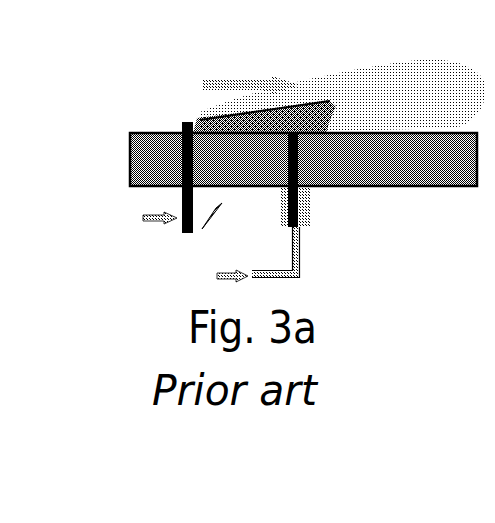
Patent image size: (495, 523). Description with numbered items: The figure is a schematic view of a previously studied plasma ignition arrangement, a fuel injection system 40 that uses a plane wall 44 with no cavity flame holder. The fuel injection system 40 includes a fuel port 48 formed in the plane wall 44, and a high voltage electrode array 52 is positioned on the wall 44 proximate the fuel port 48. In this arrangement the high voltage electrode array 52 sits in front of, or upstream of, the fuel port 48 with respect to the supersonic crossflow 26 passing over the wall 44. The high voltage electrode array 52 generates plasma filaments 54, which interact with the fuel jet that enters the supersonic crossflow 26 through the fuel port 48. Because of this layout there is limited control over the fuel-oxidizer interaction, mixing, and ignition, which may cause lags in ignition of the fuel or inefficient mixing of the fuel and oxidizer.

The fuel injection system 40 is at (259, 153).
The supersonic crossflow 26 is at (260, 77).
The plasma filaments 54 is at (197, 120).
The plane wall 44 is at (170, 153).
The high voltage electrode array 52 is at (153, 214).
The fuel port 48 is at (277, 155).